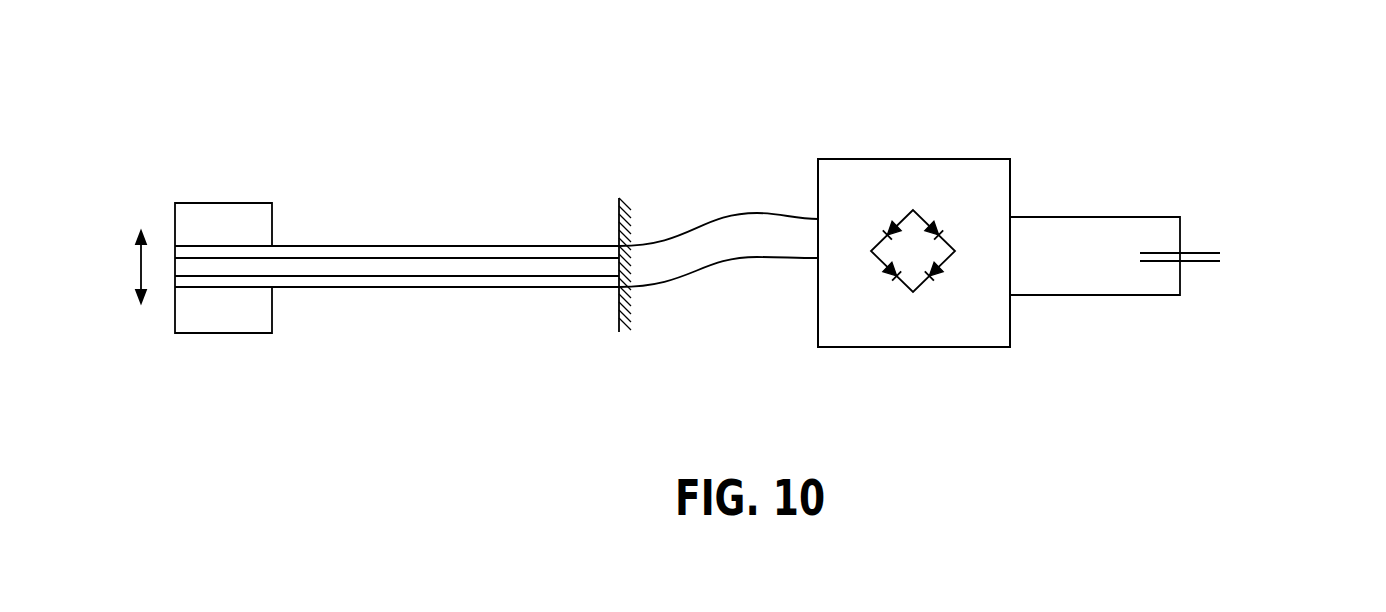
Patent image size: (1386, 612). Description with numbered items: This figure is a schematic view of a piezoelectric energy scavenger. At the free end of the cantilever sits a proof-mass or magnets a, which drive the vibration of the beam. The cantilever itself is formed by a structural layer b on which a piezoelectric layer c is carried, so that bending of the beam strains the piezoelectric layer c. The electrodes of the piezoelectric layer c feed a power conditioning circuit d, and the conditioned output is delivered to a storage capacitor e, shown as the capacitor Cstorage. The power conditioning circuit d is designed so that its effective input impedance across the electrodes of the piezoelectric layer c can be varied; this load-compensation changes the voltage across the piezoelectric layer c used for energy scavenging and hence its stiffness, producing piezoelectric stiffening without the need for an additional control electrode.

The proof-mass or magnets a is at (282, 222).
The structural layer of the piezoelectric cantilever b is at (337, 269).
The piezoelectric layer c is at (532, 238).
The power conditioning circuit d is at (928, 135).
The storage capacitor e is at (1198, 220).
The storage capacitor Cstorage is at (1225, 262).